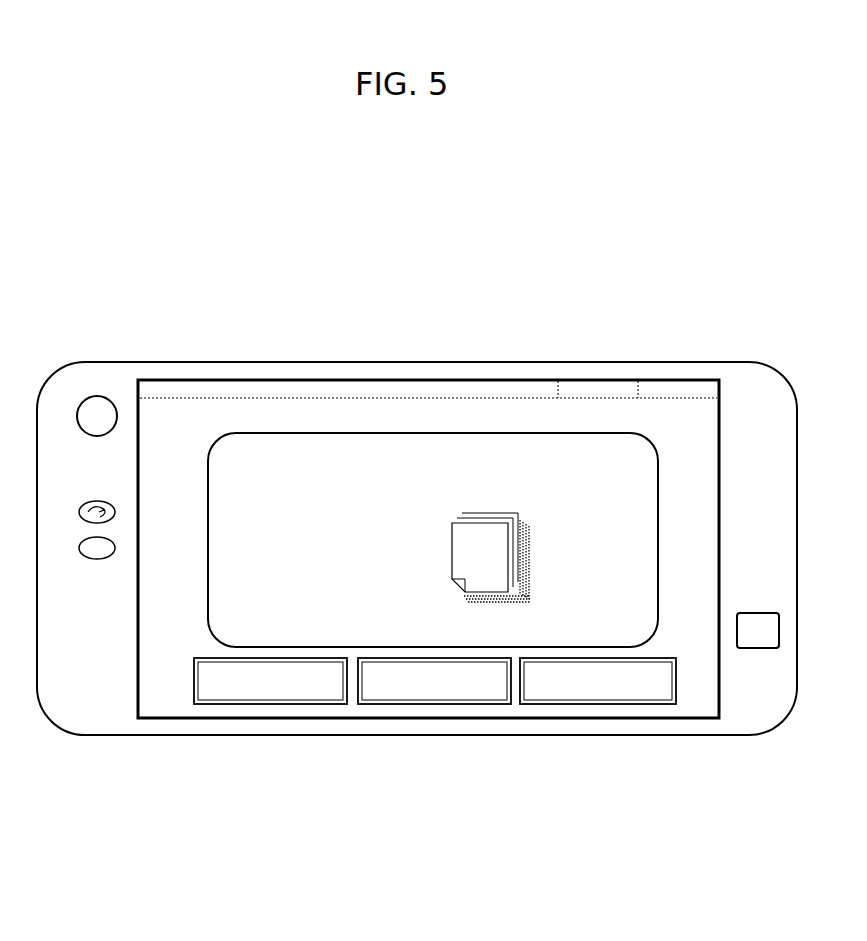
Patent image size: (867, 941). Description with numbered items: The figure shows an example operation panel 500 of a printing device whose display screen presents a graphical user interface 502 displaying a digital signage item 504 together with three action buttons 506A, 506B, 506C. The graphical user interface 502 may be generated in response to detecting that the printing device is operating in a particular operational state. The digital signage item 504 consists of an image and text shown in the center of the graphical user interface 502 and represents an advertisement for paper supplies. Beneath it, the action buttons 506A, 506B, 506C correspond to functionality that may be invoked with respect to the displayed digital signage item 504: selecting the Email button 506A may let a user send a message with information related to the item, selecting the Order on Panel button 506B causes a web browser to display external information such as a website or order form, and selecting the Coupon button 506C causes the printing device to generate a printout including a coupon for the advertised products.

The operation panel 500 is at (191, 335).
The graphical user interface 502 is at (165, 592).
The digital signage item 504 is at (571, 484).
The Email action button 506A is at (275, 705).
The Order on Panel action button 506B is at (435, 705).
The Coupon action button 506C is at (602, 705).